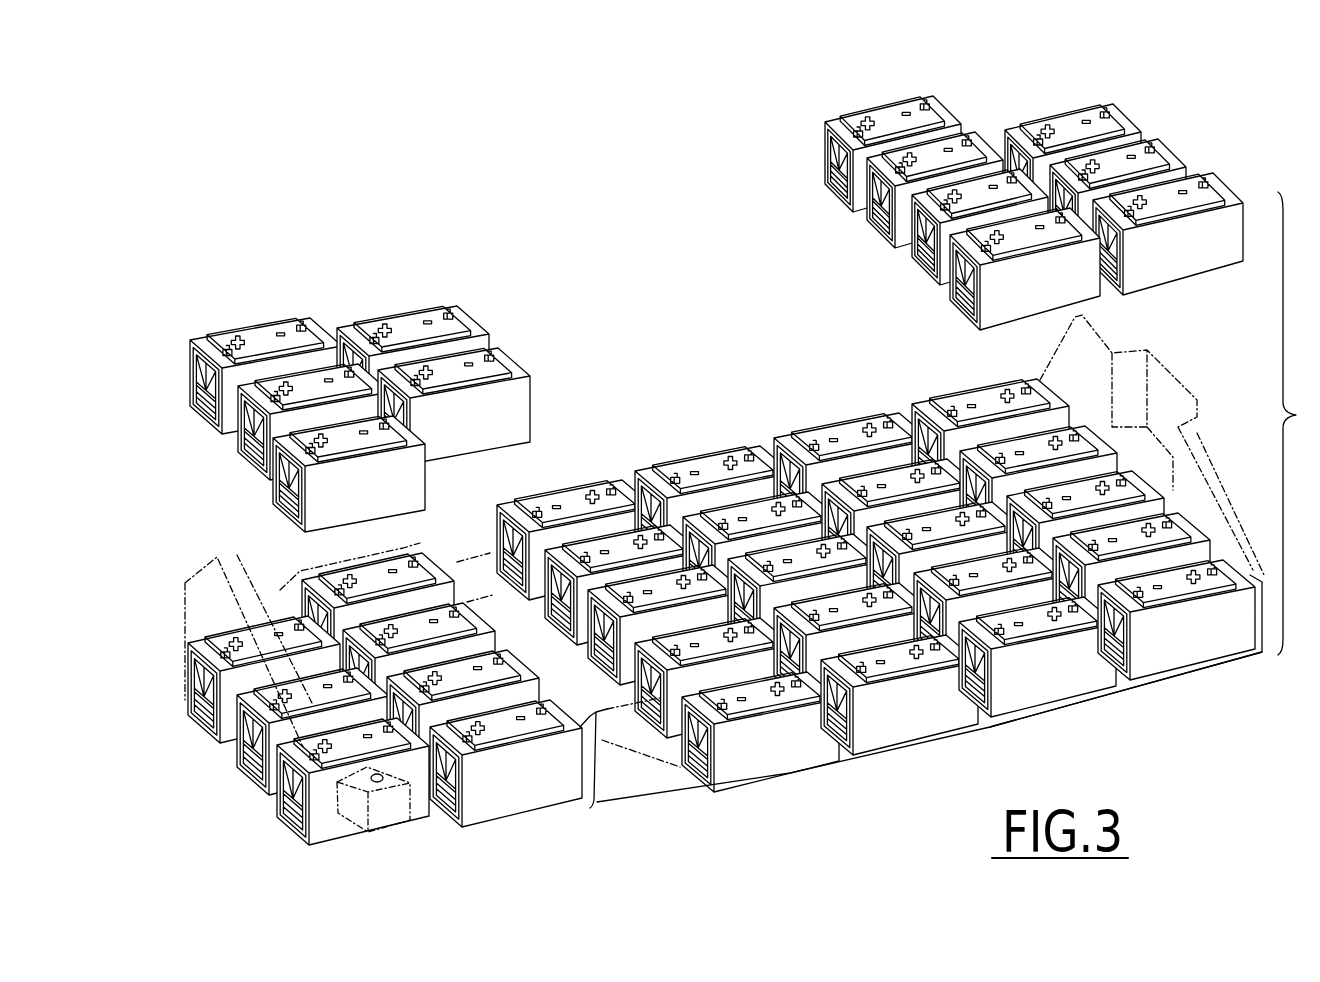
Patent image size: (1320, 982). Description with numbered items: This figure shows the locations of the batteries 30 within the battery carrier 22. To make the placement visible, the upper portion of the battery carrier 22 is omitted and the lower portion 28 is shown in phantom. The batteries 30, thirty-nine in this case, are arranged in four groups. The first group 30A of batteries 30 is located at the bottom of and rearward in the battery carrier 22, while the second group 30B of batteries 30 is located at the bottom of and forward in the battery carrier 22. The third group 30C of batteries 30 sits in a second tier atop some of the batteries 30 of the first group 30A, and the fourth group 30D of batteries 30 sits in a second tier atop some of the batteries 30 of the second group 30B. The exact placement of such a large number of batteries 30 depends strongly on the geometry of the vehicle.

The battery carrier 22 is at (841, 758).
The lower portion 28 is at (988, 726).
The batteries 30 is at (681, 462).
The first group 30A is at (1028, 373).
The second group 30B is at (590, 808).
The third group 30C is at (1087, 69).
The fourth group 30D is at (449, 284).